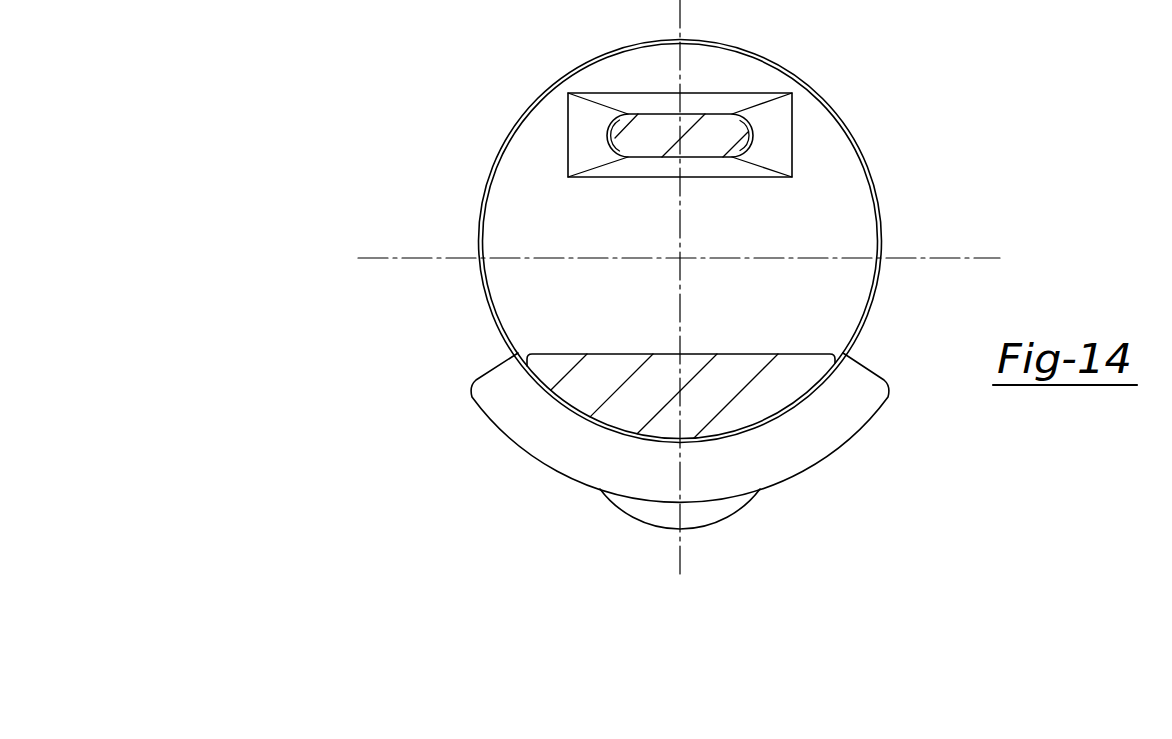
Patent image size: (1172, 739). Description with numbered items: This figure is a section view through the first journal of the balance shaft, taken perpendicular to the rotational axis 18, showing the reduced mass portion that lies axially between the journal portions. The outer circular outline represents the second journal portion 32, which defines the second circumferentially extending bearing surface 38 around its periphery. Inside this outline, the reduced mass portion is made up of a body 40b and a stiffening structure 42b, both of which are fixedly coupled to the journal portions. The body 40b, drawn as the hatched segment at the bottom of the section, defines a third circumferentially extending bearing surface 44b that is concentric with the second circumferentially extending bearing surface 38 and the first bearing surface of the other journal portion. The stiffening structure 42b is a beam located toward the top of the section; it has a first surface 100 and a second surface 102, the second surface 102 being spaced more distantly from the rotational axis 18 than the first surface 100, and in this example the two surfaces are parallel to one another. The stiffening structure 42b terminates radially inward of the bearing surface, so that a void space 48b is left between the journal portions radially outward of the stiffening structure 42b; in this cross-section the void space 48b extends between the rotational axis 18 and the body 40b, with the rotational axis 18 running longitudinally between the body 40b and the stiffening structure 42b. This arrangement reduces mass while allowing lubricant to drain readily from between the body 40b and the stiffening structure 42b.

The rotational axis 18 is at (680, 258).
The second journal portion 32 is at (649, 221).
The second circumferentially extending bearing surface 38 is at (649, 241).
The body 40b is at (727, 415).
The stiffening structure 42b is at (733, 140).
The third circumferentially extending bearing surface 44b is at (560, 405).
The void space 48b is at (570, 210).
The first surface 100 is at (751, 126).
The second surface 102 is at (770, 88).